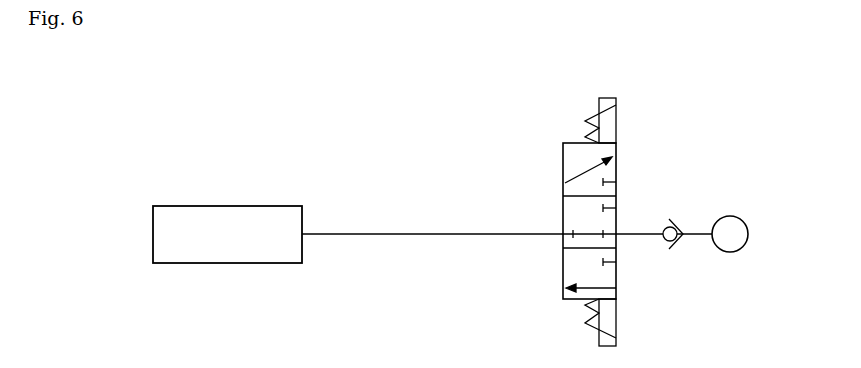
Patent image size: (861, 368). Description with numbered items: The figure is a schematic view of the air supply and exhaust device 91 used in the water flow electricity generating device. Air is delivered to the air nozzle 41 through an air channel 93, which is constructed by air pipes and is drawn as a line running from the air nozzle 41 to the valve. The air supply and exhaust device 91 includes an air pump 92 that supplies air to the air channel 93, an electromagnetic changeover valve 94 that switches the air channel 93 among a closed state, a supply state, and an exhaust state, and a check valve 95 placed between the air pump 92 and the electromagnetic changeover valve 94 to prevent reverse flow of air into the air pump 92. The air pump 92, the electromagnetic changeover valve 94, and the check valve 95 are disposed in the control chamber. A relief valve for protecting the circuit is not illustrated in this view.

The air nozzle 41 is at (153, 237).
The air supply and exhaust device 91 is at (755, 193).
The air pump 92 is at (730, 252).
The air channel 93 is at (404, 234).
The electromagnetic changeover valve 94 is at (563, 162).
The check valve 95 is at (674, 220).